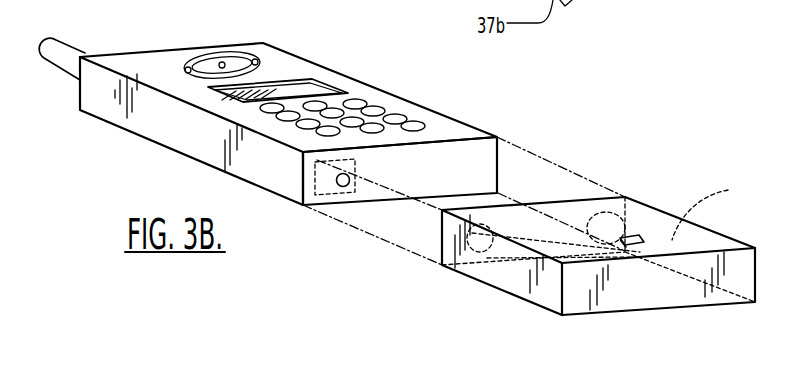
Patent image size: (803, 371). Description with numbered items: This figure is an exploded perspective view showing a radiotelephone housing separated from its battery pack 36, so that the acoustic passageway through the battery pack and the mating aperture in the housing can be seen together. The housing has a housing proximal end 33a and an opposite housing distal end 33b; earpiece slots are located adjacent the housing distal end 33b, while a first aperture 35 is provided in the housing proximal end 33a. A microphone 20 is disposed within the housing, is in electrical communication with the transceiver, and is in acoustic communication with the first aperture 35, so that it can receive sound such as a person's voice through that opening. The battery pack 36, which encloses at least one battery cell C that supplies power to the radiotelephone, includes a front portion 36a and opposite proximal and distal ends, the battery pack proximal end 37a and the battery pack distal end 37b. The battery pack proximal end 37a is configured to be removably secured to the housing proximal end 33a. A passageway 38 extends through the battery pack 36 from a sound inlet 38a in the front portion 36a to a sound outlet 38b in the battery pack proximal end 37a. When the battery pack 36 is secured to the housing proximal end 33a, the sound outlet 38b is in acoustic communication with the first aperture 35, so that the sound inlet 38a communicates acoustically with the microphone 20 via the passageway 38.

The microphone 20 is at (323, 200).
The housing proximal end 33a is at (477, 147).
The housing distal end 33b is at (233, 44).
The first aperture 35 is at (350, 184).
The battery pack 36 is at (650, 311).
The front portion 36a is at (645, 216).
The battery pack proximal end 37a is at (441, 247).
The battery pack distal end 37b is at (615, 306).
The passageway 38 is at (485, 263).
The sound inlet 38a is at (640, 247).
The sound outlet 38b is at (483, 225).
The battery cell C is at (706, 206).